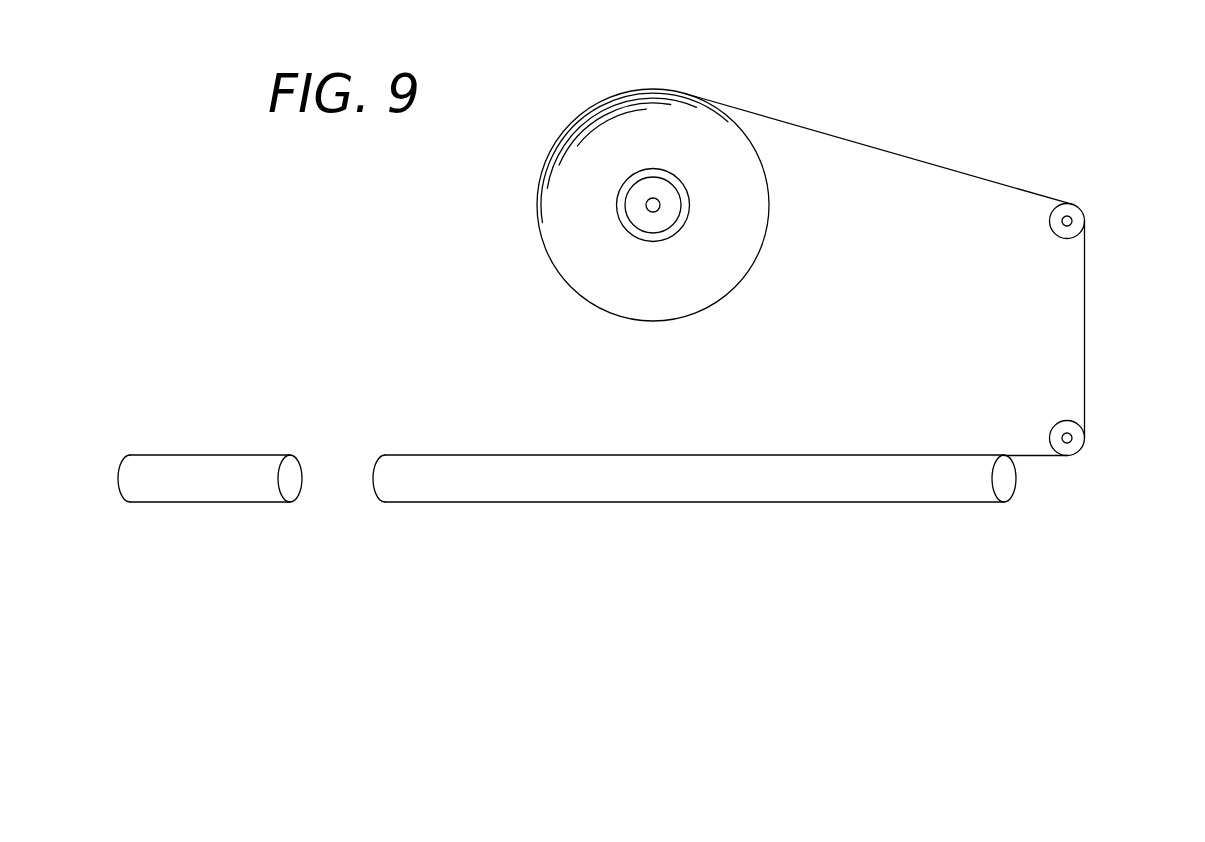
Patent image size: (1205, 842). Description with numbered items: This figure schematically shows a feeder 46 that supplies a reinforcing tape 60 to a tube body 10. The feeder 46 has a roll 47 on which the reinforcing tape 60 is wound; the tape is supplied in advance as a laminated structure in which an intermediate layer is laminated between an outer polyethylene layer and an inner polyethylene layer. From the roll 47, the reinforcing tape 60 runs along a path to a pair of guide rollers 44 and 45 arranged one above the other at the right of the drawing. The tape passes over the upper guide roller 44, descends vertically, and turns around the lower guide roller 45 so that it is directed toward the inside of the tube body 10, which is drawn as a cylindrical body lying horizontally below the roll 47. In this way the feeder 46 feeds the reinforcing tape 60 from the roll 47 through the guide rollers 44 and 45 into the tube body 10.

The tube body 10 is at (208, 453).
The guide roller 44 is at (1097, 206).
The guide roller 45 is at (1092, 457).
The feeder 46 is at (1000, 123).
The roll 47 is at (603, 287).
The reinforcing tape 60 is at (1084, 333).